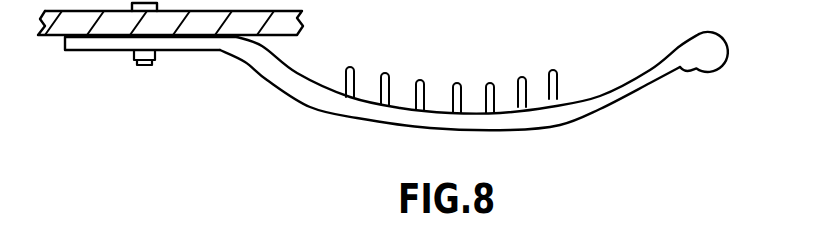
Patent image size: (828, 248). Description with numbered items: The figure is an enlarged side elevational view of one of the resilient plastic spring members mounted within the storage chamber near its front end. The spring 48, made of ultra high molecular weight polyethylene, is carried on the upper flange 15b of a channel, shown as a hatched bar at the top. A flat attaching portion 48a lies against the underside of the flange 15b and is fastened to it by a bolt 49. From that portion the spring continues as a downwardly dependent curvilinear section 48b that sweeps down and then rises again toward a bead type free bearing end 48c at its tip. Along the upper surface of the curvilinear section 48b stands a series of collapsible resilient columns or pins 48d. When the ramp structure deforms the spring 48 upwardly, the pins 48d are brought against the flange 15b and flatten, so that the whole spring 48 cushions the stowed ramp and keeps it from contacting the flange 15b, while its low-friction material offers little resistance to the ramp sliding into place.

The upper flange 15b is at (283, 27).
The spring 48 is at (397, 99).
The attaching portion 48a is at (96, 46).
The curvilinear section 48b is at (608, 98).
The bead type free bearing end 48c is at (714, 52).
The collapsible resilient pins 48d is at (548, 74).
The bolt 49 is at (155, 53).